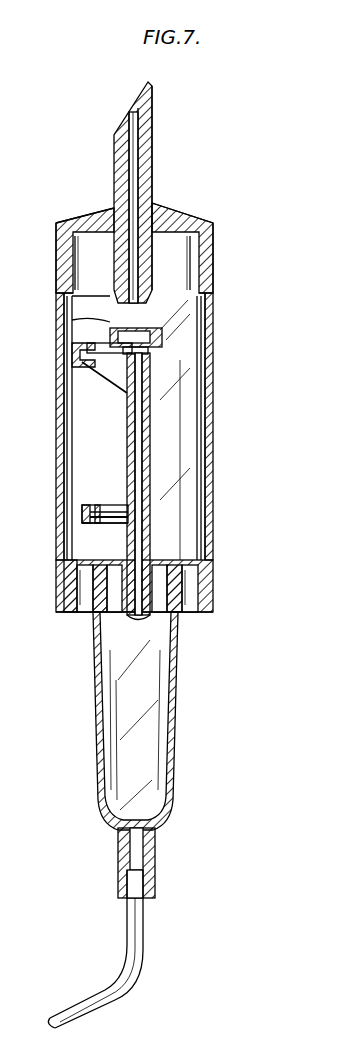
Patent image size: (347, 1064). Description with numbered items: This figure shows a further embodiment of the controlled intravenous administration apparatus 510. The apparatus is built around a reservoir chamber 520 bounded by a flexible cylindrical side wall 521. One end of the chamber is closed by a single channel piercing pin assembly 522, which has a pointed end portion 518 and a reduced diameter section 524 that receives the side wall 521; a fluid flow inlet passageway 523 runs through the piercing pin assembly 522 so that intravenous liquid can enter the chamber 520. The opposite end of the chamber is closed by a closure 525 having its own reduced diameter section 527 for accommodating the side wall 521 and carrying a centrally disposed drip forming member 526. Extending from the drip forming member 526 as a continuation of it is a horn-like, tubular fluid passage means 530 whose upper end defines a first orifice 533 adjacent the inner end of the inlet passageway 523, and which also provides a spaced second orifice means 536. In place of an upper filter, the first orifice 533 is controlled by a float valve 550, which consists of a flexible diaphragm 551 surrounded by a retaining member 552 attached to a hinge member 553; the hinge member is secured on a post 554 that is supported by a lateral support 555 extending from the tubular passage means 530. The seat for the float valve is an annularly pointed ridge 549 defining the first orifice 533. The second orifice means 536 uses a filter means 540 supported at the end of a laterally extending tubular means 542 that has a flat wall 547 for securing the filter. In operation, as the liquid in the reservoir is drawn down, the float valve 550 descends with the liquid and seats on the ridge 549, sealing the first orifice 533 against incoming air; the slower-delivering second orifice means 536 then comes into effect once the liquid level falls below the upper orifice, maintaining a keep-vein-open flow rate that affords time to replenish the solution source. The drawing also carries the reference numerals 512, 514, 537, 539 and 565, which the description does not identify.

The controlled I.V. administration apparatus 510 is at (55, 242).
The container 512 is at (180, 731).
The discharge tube 514 is at (118, 987).
The pointed end portion 518 is at (150, 96).
The reservoir chamber 520 is at (213, 447).
The flexible cylindrical side wall 521 is at (213, 512).
The piercing pin assembly 522 is at (152, 149).
The fluid flow inlet passageway 523 is at (133, 116).
The reduced diameter section 524 is at (213, 263).
The closure 525 is at (203, 612).
The drip forming member 526 is at (98, 618).
The reduced diameter section 527 is at (213, 579).
The tubular fluid passage means 530 is at (198, 472).
The first orifice 533 is at (153, 370).
The second orifice means 536 is at (103, 525).
The seal upper surface 537 is at (112, 510).
The plunger rod bore 539 is at (137, 396).
The filter means 540 is at (82, 514).
The laterally extending tubular means 542 is at (100, 530).
The flat wall 547 is at (112, 517).
The annularly pointed ridge 549 is at (100, 372).
The float valve 550 is at (162, 337).
The flexible diaphragm 551 is at (165, 320).
The retaining member 552 is at (70, 294).
The hinge member 553 is at (73, 314).
The post 554 is at (85, 343).
The lateral support 555 is at (118, 365).
The end wall section 565 is at (90, 583).